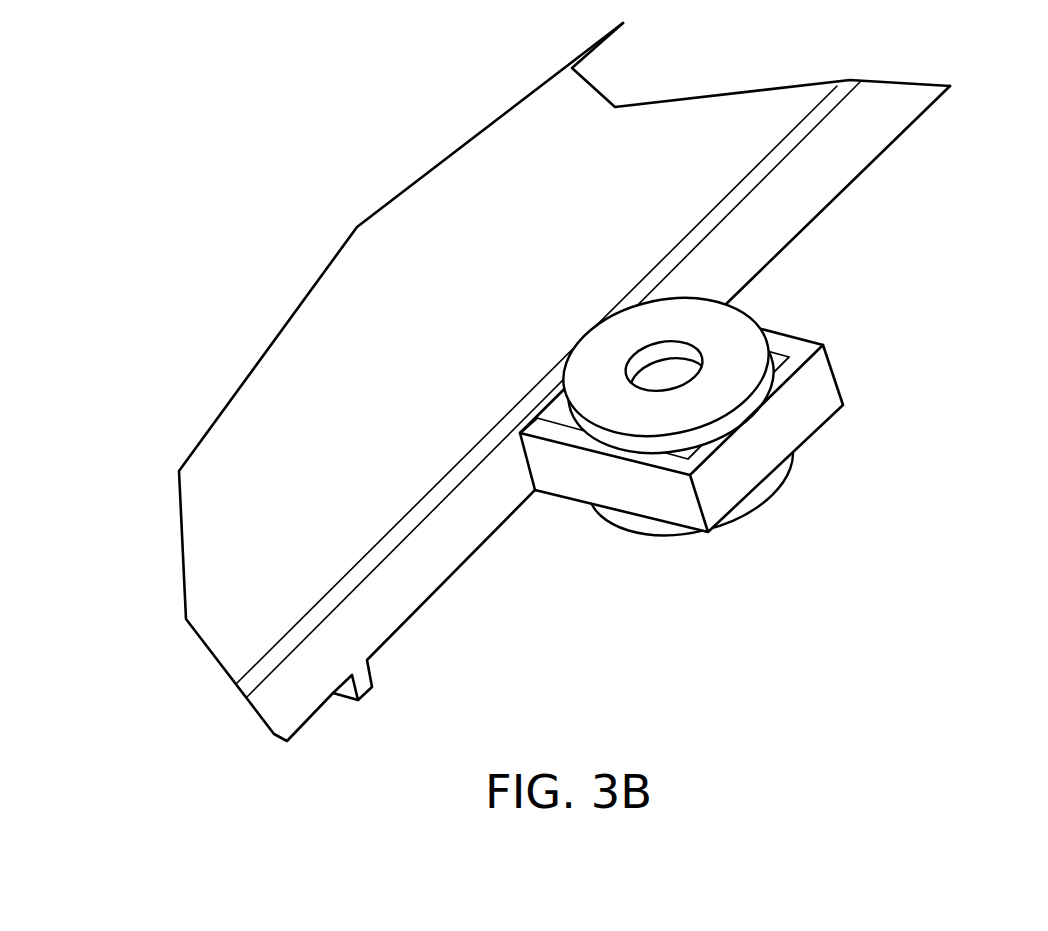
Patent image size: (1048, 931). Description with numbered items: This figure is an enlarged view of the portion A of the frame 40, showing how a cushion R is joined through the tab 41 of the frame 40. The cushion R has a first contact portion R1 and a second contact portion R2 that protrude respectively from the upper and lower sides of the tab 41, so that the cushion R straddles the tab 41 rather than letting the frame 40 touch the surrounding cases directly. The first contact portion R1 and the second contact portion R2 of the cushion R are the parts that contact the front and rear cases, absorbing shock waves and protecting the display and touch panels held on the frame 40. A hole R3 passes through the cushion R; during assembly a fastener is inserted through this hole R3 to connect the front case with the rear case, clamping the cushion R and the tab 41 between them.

The portion A is at (150, 102).
The frame 40 is at (394, 230).
The tab 41 is at (808, 395).
The cushion R is at (760, 310).
The first contact portion R1 is at (610, 403).
The second contact portion R2 is at (775, 482).
The hole R3 is at (670, 375).